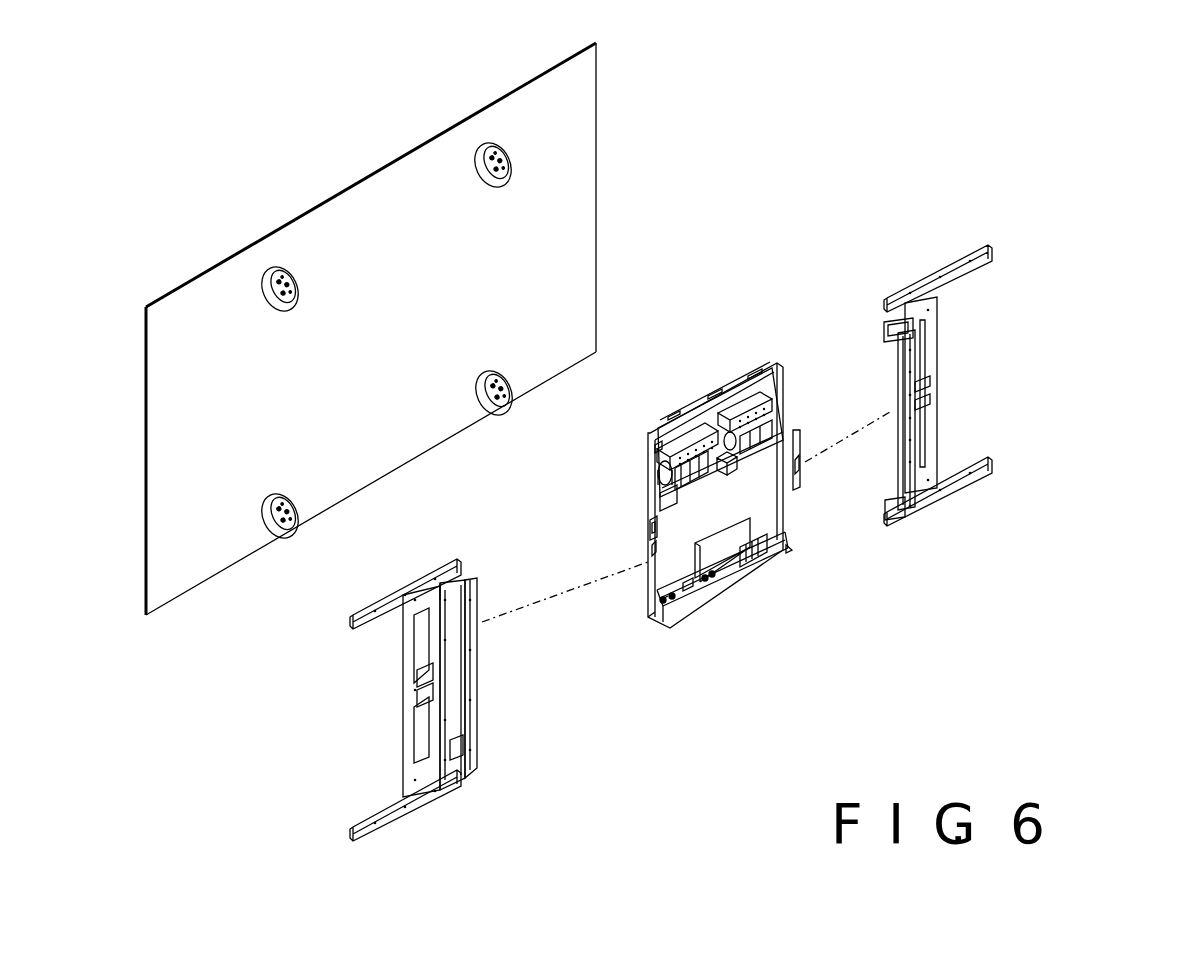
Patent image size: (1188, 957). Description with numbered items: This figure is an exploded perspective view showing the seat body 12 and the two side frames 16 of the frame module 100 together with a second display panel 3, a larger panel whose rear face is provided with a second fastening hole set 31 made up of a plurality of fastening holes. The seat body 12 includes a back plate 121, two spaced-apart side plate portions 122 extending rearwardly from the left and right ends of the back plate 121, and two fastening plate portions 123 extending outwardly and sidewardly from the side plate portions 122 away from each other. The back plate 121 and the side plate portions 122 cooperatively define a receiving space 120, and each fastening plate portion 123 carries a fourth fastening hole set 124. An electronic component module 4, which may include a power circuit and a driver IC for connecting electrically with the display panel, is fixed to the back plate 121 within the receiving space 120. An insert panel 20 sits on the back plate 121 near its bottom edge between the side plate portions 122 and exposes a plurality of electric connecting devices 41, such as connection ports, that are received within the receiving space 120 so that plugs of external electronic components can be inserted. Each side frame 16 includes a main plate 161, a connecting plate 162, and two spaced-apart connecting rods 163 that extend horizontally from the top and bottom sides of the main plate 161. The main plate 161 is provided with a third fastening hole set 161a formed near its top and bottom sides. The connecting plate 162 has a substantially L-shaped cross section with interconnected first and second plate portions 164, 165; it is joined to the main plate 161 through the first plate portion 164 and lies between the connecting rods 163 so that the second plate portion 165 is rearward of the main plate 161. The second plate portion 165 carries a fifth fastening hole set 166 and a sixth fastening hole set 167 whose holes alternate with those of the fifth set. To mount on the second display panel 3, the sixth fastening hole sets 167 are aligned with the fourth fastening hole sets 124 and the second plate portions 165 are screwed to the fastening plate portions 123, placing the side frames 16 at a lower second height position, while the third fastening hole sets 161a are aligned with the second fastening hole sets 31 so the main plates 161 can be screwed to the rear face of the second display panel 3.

The second display panel 3 is at (681, 160).
The second fastening hole set 31 is at (483, 184).
The frame module 100 is at (1085, 255).
The side frame 16 is at (913, 266).
The connecting rod 163 is at (955, 270).
The third fastening hole set 161a is at (926, 310).
The main plate 161 is at (930, 420).
The sixth fastening hole set 167 is at (928, 398).
The second plate portion 165 is at (905, 360).
The fifth fastening hole set 166 is at (905, 430).
The connecting plate 162 is at (913, 490).
The first plate portion 164 is at (455, 598).
The seat body 12 is at (722, 350).
The electronic component module 4 is at (755, 410).
The back plate 121 is at (655, 440).
The side plate portion 122 is at (797, 440).
The fourth fastening hole set 124 is at (803, 468).
The fastening plate portion 123 is at (677, 600).
The insert panel 20 is at (707, 520).
The receiving space 120 is at (723, 558).
The electric connecting device 41 is at (757, 565).